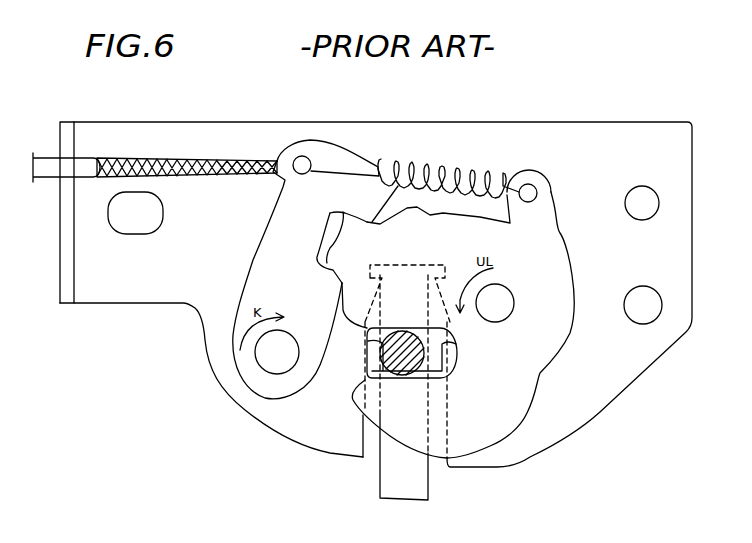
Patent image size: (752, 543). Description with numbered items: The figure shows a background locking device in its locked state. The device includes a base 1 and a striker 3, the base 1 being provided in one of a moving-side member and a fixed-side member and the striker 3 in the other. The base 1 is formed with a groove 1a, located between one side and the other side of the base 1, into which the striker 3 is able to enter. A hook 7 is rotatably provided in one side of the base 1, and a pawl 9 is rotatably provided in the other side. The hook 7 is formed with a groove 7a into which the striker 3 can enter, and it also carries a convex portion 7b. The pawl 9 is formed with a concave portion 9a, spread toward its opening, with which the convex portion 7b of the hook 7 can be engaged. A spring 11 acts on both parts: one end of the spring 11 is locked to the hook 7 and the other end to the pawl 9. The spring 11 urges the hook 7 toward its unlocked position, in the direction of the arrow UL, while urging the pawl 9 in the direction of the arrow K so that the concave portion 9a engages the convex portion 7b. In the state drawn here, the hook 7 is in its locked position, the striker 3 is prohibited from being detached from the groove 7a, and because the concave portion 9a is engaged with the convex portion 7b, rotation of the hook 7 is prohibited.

The base 1 is at (199, 140).
The groove 1a is at (366, 445).
The striker 3 is at (418, 470).
The hook 7 is at (418, 295).
The groove 7a is at (363, 379).
The convex portion 7b is at (337, 243).
The pawl 9 is at (278, 246).
The concave portion 9a is at (325, 222).
The spring 11 is at (436, 168).